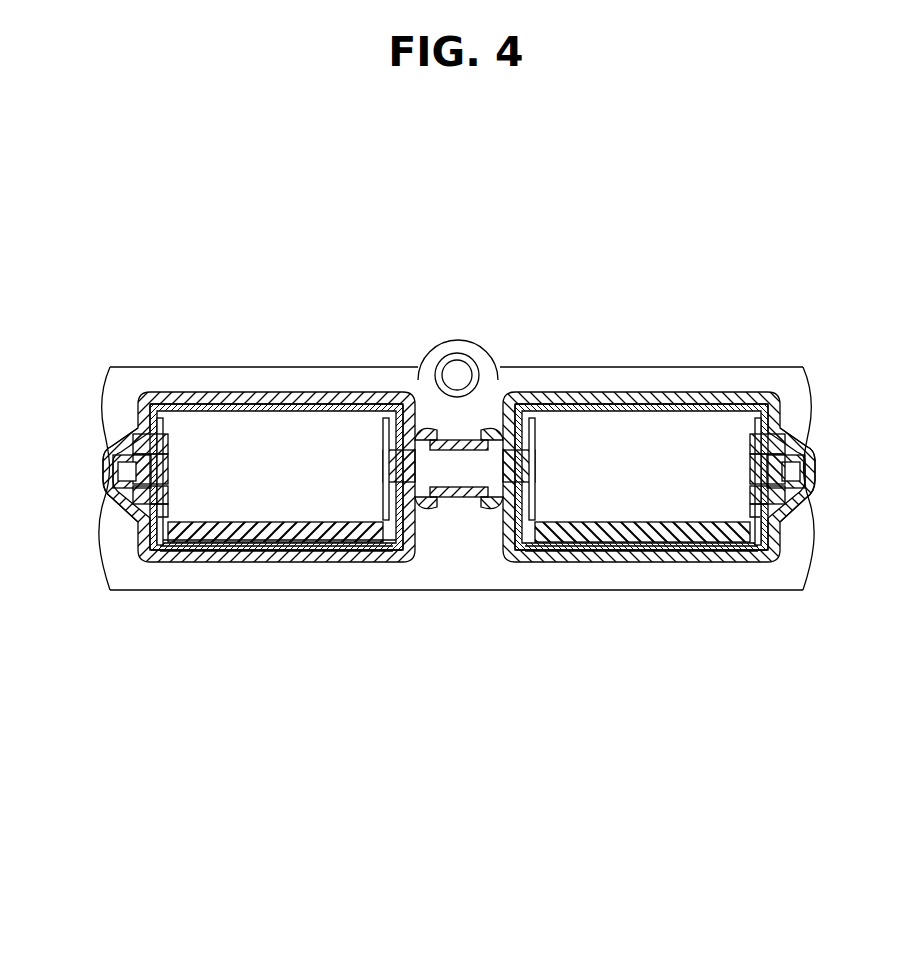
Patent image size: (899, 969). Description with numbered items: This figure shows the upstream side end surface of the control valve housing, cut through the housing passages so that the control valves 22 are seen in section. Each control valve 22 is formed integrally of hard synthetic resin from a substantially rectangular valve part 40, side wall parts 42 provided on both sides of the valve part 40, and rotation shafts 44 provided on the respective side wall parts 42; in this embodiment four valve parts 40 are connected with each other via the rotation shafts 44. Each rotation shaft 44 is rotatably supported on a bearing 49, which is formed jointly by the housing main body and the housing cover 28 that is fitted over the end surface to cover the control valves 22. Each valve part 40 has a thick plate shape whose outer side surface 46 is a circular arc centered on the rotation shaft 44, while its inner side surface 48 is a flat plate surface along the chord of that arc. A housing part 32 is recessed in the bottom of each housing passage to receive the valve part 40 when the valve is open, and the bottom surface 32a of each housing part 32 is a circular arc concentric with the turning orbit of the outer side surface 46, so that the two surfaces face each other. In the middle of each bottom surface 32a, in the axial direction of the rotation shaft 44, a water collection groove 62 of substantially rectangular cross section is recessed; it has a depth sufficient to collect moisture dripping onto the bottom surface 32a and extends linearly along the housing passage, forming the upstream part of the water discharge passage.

The control valve 22 is at (568, 532).
The housing cover 28 is at (352, 392).
The housing part 32 is at (322, 545).
The bottom surface 32a is at (365, 545).
The valve part 40 is at (193, 688).
The side wall part 42 is at (125, 512).
The rotation shaft 44 is at (120, 450).
The outer side surface 46 is at (190, 520).
The inner side surface 48 is at (160, 547).
The bearing 49 is at (803, 440).
The water collection groove 62 is at (270, 550).